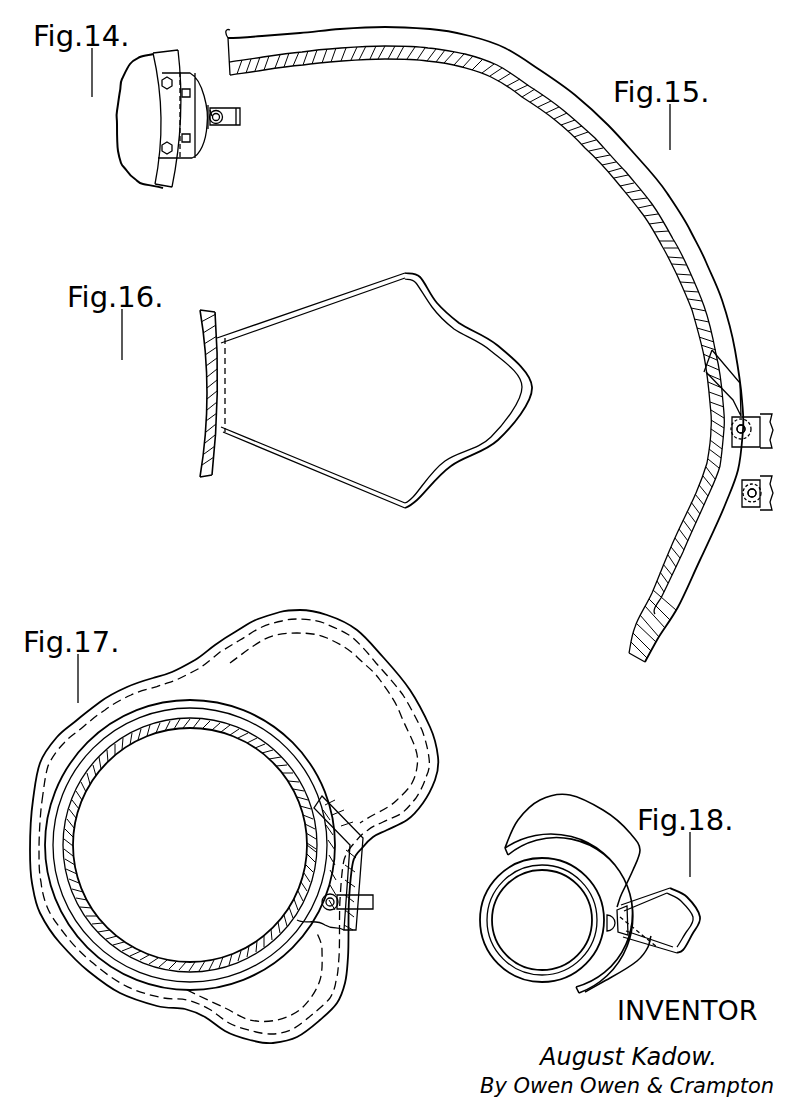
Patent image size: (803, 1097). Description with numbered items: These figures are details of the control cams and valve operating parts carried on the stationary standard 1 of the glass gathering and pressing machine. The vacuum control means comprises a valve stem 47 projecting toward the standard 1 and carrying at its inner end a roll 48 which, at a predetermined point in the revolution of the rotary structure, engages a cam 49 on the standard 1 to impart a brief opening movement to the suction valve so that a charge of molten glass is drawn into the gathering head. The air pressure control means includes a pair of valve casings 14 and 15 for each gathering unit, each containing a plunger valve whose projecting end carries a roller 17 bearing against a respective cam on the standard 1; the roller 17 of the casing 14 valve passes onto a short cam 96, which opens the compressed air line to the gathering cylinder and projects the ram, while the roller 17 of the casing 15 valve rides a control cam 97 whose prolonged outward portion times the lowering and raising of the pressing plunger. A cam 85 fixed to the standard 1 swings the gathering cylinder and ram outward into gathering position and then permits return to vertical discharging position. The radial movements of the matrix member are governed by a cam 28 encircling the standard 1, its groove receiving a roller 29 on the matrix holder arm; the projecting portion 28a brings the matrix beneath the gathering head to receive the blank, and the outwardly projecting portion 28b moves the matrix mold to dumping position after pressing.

In FIG. 14, the standard 1 is at (158, 176).
In FIG. 15, the standard 1 is at (677, 247).
In FIG. 16, the standard 1 is at (212, 403).
In FIG. 17, the standard 1 is at (247, 733).
In FIG. 18, the standard 1 is at (488, 928).
In FIG. 15, the valve casing 14 is at (765, 414).
In FIG. 15, the valve casing 15 is at (765, 510).
In FIG. 15, the roller 17 is at (747, 495).
In FIG. 17, the cam 28 is at (143, 990).
In FIG. 18, the cam 28 is at (577, 977).
In FIG. 17, the projecting portion of the cam 28a is at (265, 1032).
In FIG. 18, the projecting portion of the cam 28a is at (633, 967).
In FIG. 17, the outwardly projecting portion of the cam 28b is at (370, 690).
In FIG. 18, the outwardly projecting portion of the cam 28b is at (593, 820).
In FIG. 17, the roller 29 is at (340, 893).
In FIG. 14, the stem 47 is at (240, 118).
In FIG. 14, the roll 48 is at (215, 109).
In FIG. 14, the cam 49 is at (202, 147).
In FIG. 18, the cam 49 is at (607, 923).
In FIG. 16, the cam 85 is at (483, 338).
In FIG. 18, the cam 85 is at (703, 917).
In FIG. 15, the cam 96 is at (728, 352).
In FIG. 18, the cam 96 is at (630, 917).
In FIG. 15, the control cam 97 is at (692, 252).
In FIG. 18, the control cam 97 is at (587, 855).